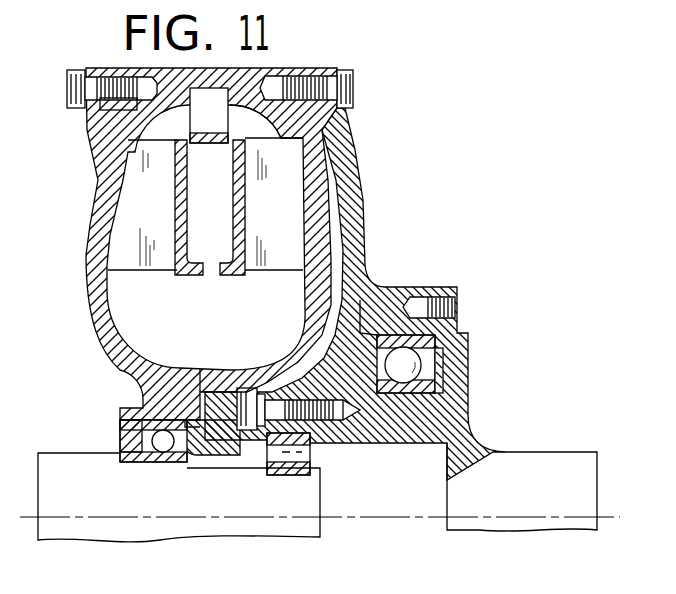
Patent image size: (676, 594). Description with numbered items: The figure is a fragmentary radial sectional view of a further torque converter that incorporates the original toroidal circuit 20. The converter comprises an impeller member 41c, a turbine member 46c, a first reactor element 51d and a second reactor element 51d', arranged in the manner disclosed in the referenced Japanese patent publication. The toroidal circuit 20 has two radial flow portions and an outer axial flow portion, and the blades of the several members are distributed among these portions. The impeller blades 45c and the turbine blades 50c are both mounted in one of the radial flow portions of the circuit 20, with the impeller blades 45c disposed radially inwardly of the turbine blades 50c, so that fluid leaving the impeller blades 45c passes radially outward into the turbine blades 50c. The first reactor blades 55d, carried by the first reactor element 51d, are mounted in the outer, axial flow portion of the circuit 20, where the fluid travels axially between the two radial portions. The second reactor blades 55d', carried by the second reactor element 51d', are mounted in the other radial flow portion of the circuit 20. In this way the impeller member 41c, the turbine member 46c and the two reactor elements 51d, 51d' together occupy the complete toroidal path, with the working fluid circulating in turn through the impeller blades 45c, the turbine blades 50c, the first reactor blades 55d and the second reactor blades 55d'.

The first reactor element 51d is at (210, 244).
The first reactor blades 55d is at (209, 115).
The turbine blades 50c is at (273, 149).
The turbine member 46c is at (320, 146).
The second reactor blades 55d' is at (142, 205).
The impeller blades 45c is at (292, 237).
The second reactor element 51d' is at (165, 224).
The impeller member 41c is at (282, 272).
The toroidal circuit 20 is at (232, 342).